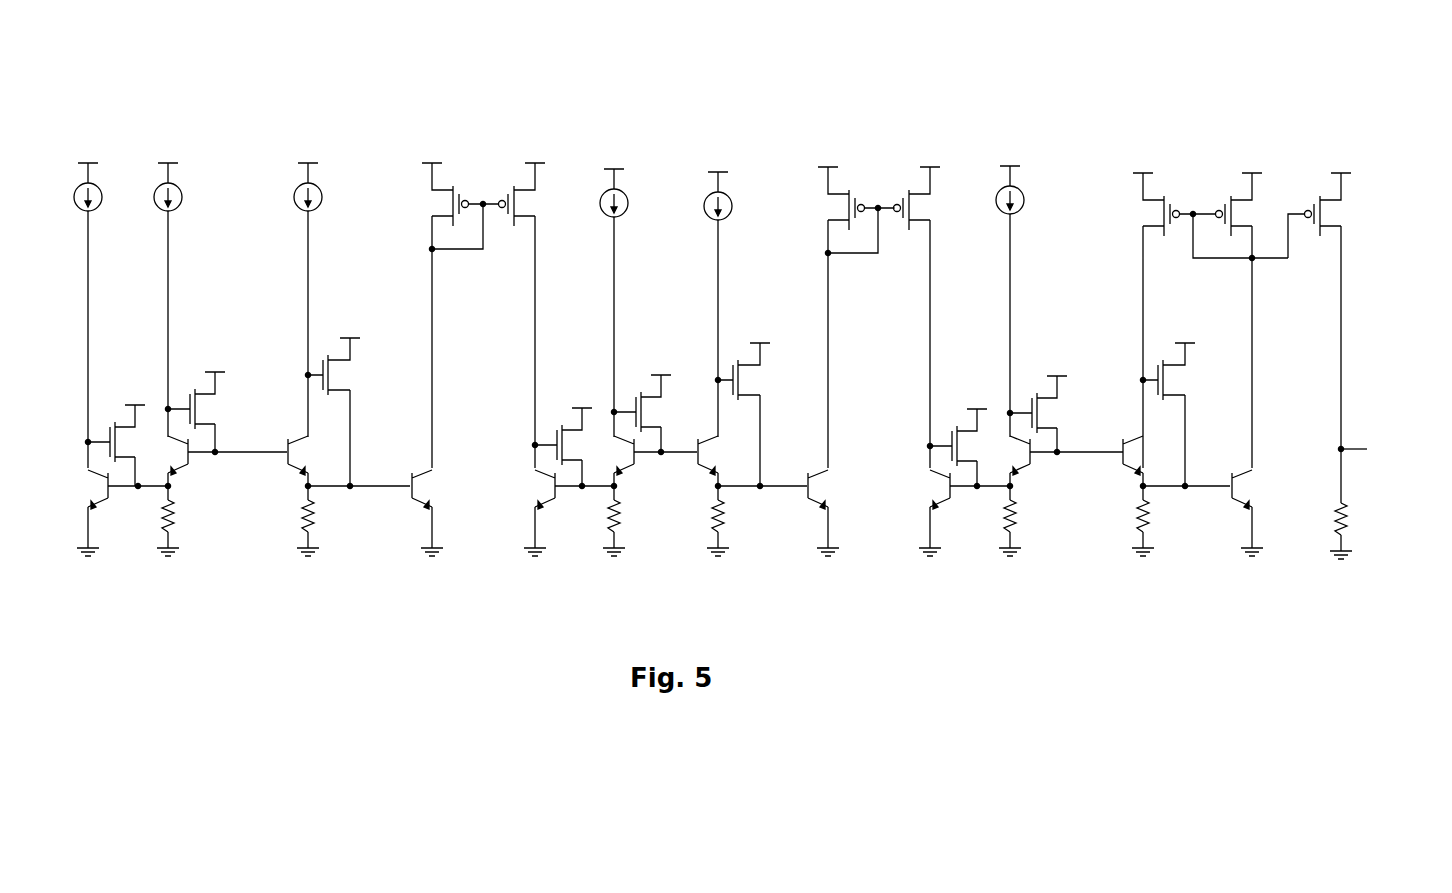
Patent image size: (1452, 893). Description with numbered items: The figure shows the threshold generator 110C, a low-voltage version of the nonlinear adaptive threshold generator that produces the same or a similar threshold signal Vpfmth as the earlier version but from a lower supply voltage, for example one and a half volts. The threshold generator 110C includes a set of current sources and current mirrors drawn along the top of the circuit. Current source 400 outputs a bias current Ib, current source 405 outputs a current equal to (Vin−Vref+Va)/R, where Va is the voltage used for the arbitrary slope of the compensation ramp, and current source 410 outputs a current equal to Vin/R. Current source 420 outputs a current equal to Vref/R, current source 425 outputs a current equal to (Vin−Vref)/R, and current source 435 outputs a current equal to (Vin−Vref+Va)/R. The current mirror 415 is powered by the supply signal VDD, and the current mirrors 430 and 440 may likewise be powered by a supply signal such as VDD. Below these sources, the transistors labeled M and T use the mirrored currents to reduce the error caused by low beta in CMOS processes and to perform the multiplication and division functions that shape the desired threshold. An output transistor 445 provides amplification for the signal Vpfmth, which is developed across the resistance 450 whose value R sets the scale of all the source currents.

The threshold generator 110C is at (766, 88).
The current source 400 is at (103, 183).
The current source 405 is at (190, 193).
The current source 410 is at (328, 183).
The current mirror 415 is at (495, 173).
The current source 420 is at (627, 187).
The current source 425 is at (733, 190).
The current mirror 430 is at (862, 172).
The current source 435 is at (1033, 190).
The current mirror 440 is at (1191, 169).
The output transistor 445 is at (1348, 213).
The resistance 450 is at (1348, 503).